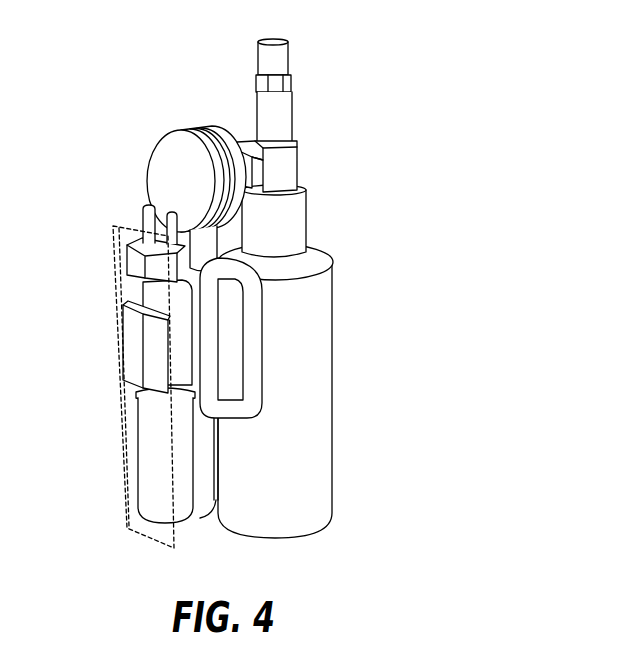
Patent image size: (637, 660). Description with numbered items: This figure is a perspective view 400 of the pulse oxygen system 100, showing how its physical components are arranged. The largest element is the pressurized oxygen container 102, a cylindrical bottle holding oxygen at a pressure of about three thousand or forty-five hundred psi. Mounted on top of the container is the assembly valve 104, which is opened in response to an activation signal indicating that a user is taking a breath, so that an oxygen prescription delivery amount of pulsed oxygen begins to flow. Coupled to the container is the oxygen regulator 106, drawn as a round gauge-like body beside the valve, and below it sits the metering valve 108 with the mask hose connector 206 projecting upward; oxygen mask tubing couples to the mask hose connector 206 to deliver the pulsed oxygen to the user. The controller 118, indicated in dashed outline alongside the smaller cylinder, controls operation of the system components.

The pulse oxygen system 100 is at (280, 279).
The pressurized oxygen container 102 is at (333, 345).
The assembly valve 104 is at (279, 58).
The oxygen regulator 106 is at (160, 155).
The metering valve 108 is at (137, 263).
The controller 118 is at (115, 288).
The mask hose connector 206 is at (145, 222).
The perspective view 400 is at (497, 80).